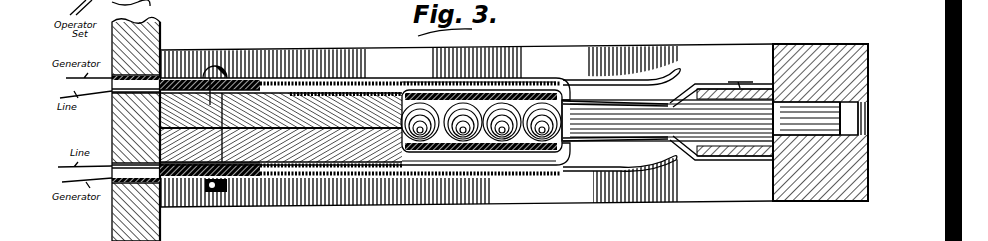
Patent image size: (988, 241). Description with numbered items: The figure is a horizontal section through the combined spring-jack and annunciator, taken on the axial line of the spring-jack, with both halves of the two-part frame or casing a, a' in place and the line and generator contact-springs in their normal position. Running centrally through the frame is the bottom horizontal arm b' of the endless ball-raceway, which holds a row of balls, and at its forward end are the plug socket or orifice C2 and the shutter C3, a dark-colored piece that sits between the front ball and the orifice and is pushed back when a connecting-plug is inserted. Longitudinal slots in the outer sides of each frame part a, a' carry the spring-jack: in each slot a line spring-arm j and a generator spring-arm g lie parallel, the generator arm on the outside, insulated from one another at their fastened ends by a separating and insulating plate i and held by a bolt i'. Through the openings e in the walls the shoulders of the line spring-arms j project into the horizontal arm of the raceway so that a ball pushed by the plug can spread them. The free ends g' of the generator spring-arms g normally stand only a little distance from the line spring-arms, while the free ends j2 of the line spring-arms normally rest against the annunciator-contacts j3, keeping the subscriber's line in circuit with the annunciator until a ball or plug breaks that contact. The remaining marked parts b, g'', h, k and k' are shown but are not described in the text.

The frame part a is at (466, 190).
The frame part a' is at (466, 53).
The core rod / shaft with balls b is at (466, 127).
The bottom horizontal arm b' is at (492, 121).
The opening e is at (459, 78).
The generator spring-arm g is at (360, 127).
The free end of generator spring-arm g' is at (628, 120).
The flap shading / contact g'' is at (607, 126).
The insulating layer h is at (277, 64).
The separating and insulating plate i is at (435, 128).
The bolt i' is at (213, 207).
The line spring-arm j is at (721, 134).
The free end of line spring-arm j2 is at (740, 80).
The annunciator-contact j3 is at (727, 88).
The end block k is at (820, 122).
The end cap k' is at (849, 163).
The plug socket or orifice C2 is at (862, 137).
The shutter C3 is at (806, 118).